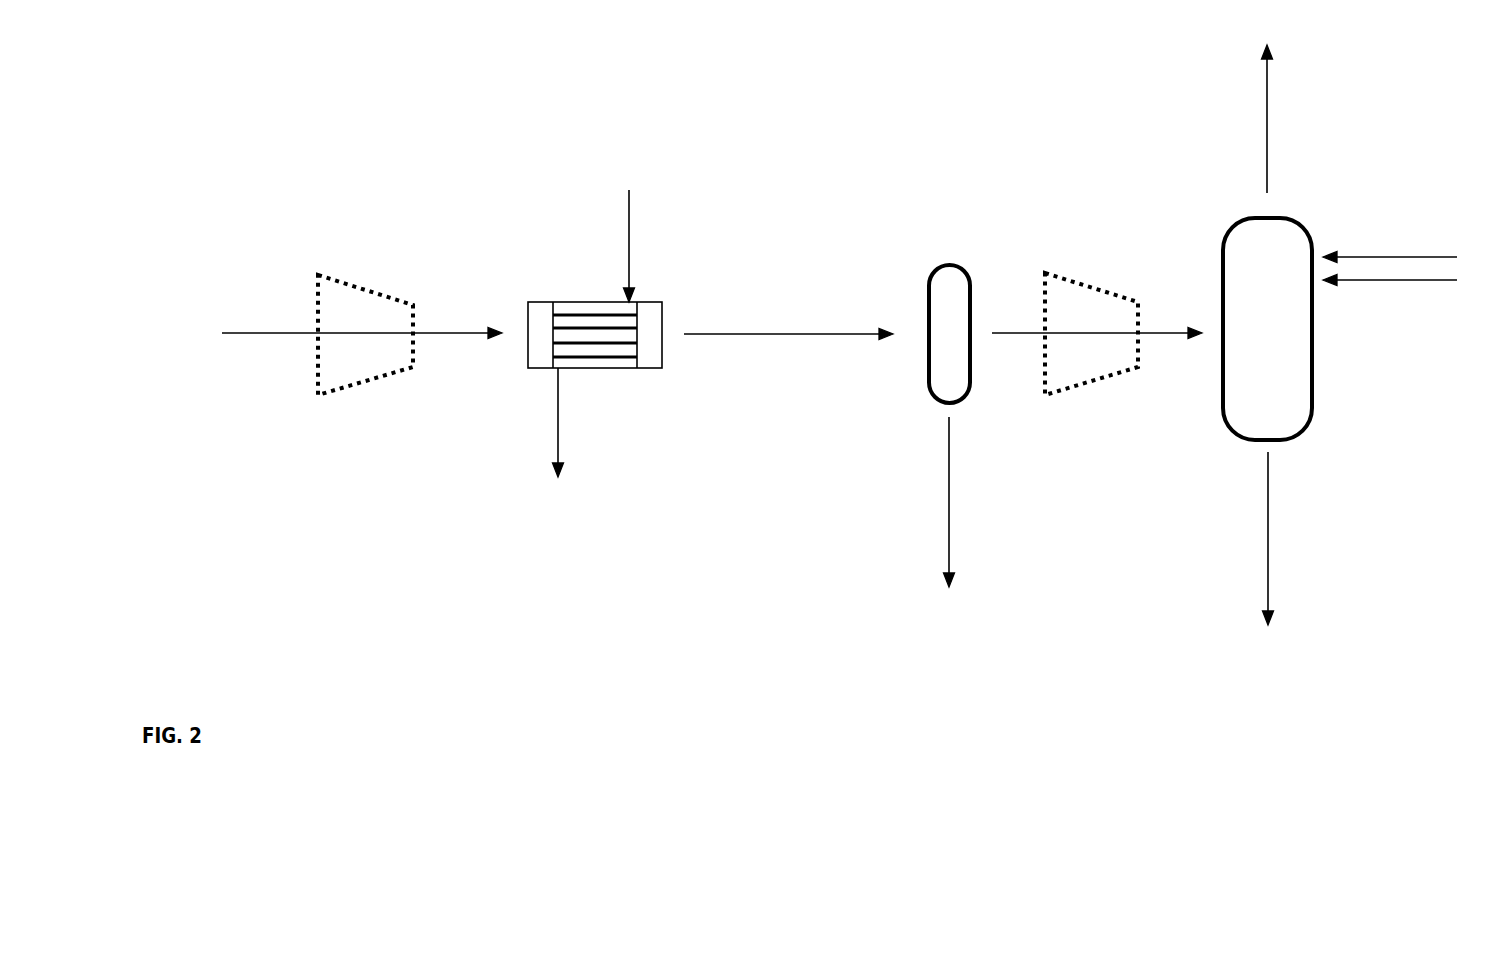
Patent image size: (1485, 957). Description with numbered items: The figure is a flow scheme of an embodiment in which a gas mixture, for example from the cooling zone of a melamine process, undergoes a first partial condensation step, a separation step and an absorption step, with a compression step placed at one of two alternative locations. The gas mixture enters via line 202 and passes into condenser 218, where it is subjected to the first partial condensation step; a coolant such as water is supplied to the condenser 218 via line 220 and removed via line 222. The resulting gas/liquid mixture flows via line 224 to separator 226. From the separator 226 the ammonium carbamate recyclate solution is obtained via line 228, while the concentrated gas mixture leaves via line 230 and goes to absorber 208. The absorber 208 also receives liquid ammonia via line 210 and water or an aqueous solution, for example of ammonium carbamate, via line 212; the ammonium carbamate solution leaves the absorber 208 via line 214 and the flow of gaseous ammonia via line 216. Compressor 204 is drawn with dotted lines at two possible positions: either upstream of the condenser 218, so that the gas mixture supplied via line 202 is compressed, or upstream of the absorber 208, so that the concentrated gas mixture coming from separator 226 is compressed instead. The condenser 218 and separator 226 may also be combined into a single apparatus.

The line 202 is at (362, 321).
The compressor 204 is at (351, 274).
The absorber 208 is at (1251, 344).
The line 210 is at (1390, 245).
The line 212 is at (1390, 300).
The line 214 is at (1296, 538).
The line 216 is at (1294, 119).
The condenser 218 is at (551, 296).
The line 220 is at (649, 246).
The line 222 is at (577, 422).
The line 224 is at (788, 322).
The separator 226 is at (938, 254).
The line 228 is at (974, 502).
The line 230 is at (1097, 321).